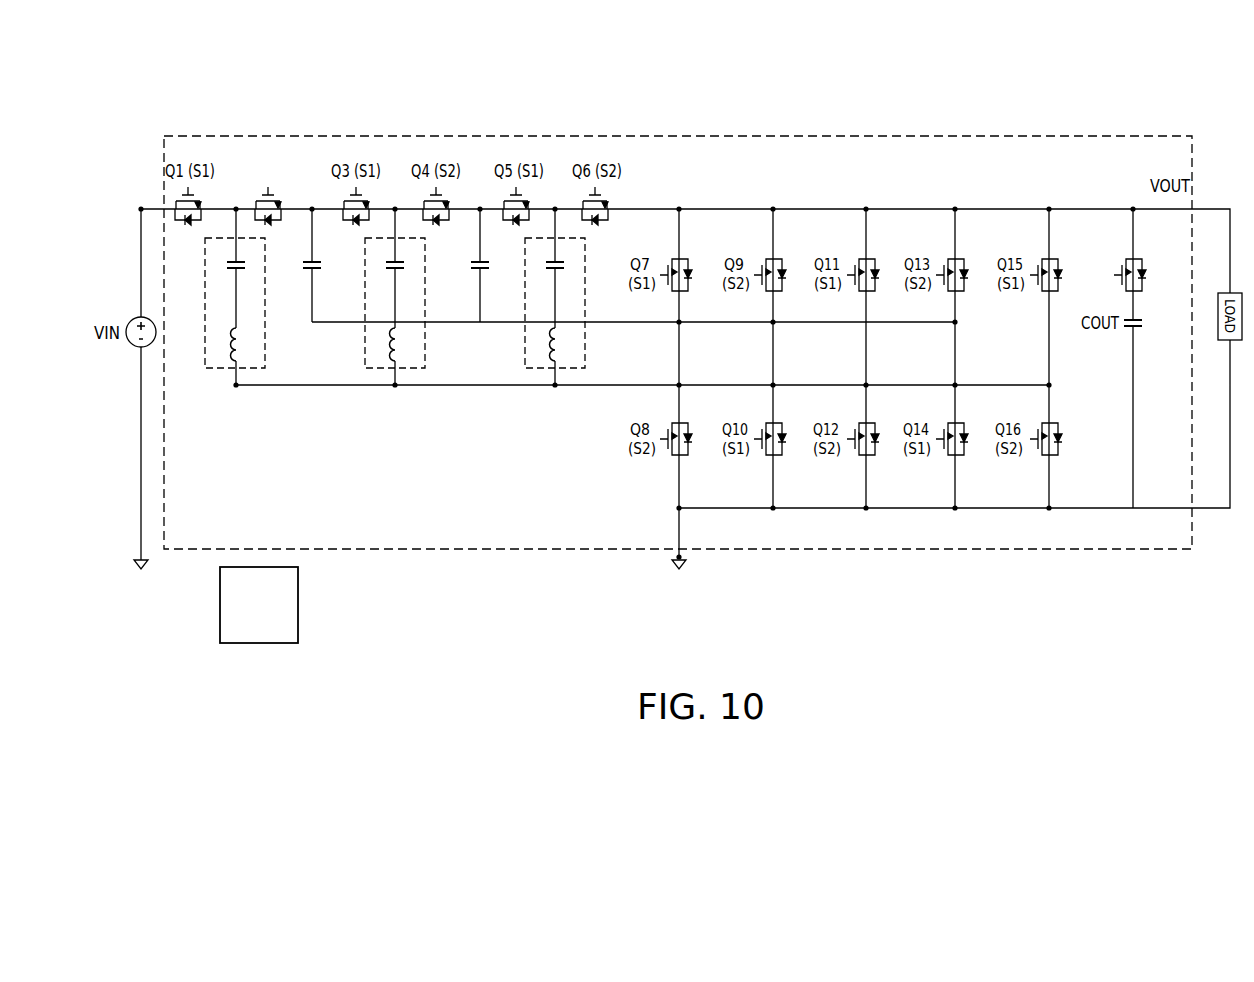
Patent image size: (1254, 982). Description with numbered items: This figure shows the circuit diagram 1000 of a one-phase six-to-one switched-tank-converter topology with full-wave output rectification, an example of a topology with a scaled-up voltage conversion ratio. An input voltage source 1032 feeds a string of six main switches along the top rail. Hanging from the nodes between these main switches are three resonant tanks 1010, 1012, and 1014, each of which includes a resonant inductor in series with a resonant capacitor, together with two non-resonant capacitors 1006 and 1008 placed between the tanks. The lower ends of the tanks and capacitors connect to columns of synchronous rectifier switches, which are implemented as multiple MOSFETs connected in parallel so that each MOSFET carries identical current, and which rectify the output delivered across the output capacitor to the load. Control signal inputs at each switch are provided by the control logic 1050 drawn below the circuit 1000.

The circuit diagram 1000 is at (196, 33).
The non-resonant capacitor 1006 is at (303, 284).
The non-resonant capacitor 1008 is at (474, 284).
The resonant tank 1010 is at (212, 368).
The resonant tank 1012 is at (372, 368).
The resonant tank 1014 is at (560, 368).
The input voltage source VIN 1032 is at (118, 338).
The control logic 1050 is at (220, 605).